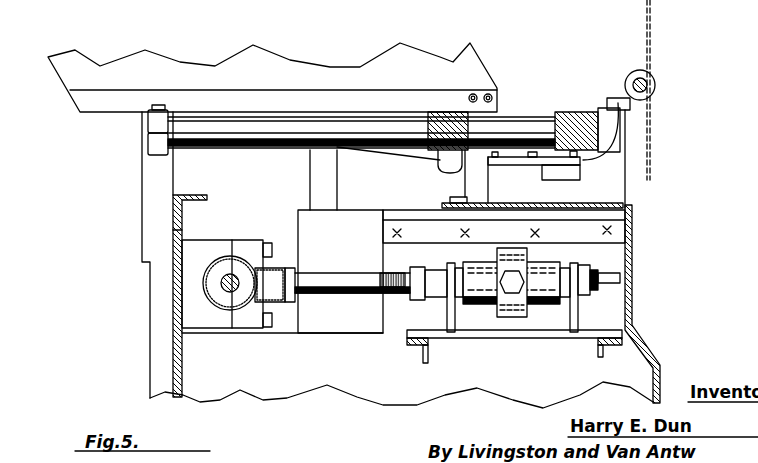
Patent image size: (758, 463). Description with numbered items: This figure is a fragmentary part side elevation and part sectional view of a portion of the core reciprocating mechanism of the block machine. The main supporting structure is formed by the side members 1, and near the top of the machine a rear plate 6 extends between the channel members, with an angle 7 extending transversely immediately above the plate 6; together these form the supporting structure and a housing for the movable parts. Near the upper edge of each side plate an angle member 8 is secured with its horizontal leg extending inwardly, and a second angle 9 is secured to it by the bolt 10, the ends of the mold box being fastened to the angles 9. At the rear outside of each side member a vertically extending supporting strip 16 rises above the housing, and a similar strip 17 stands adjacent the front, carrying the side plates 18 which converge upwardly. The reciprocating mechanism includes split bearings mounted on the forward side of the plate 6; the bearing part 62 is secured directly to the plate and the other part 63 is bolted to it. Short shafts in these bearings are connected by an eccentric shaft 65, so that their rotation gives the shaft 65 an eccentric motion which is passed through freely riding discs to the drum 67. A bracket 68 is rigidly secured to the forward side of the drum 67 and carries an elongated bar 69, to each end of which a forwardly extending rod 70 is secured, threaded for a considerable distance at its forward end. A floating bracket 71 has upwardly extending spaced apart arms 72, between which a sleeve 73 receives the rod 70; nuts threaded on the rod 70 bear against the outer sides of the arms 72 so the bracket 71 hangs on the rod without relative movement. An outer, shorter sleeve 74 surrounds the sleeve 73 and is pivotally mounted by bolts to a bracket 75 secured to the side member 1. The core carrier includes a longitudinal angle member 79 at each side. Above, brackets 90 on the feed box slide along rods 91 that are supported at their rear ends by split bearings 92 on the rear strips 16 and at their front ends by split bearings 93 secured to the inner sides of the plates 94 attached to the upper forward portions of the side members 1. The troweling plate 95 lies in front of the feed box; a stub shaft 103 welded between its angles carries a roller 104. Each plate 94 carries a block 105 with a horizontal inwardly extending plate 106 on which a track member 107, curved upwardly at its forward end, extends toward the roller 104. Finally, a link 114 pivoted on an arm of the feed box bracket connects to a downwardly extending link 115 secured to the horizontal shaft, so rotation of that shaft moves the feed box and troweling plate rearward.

The side members 1 is at (290, 385).
The plate 6 is at (175, 290).
The angle 7 is at (173, 208).
The angle member 8 is at (598, 226).
The second angle 9 is at (616, 198).
The bolt 10 is at (578, 205).
The vertically extending supporting strip 16 is at (152, 168).
The strip 17 is at (490, 192).
The side plates 18 is at (108, 83).
The bearing part 62 is at (197, 315).
The bearing part 63 is at (248, 318).
The eccentric shaft 65 is at (226, 279).
The drum 67 is at (238, 260).
The bracket 68 is at (272, 302).
The elongated bar 69 is at (286, 268).
The rod 70 is at (323, 278).
The floating bracket 71 is at (532, 332).
The arms 72 is at (447, 304).
The sleeve 73 is at (573, 278).
The outer sleeve 74 is at (550, 300).
The bracket 75 is at (507, 313).
The longitudinal angle member 79 is at (423, 348).
The brackets 90 is at (443, 123).
The rods 91 is at (237, 128).
The split bearings 92 is at (152, 148).
The split bearings 93 is at (607, 117).
The plates 94 is at (615, 183).
The troweling plate 95 is at (652, 25).
The stub shaft 103 is at (637, 78).
The roller 104 is at (655, 80).
The block 105 is at (570, 172).
The horizontal plate 106 is at (488, 165).
The track member 107 is at (583, 162).
The link 114 is at (403, 151).
The link 115 is at (320, 158).